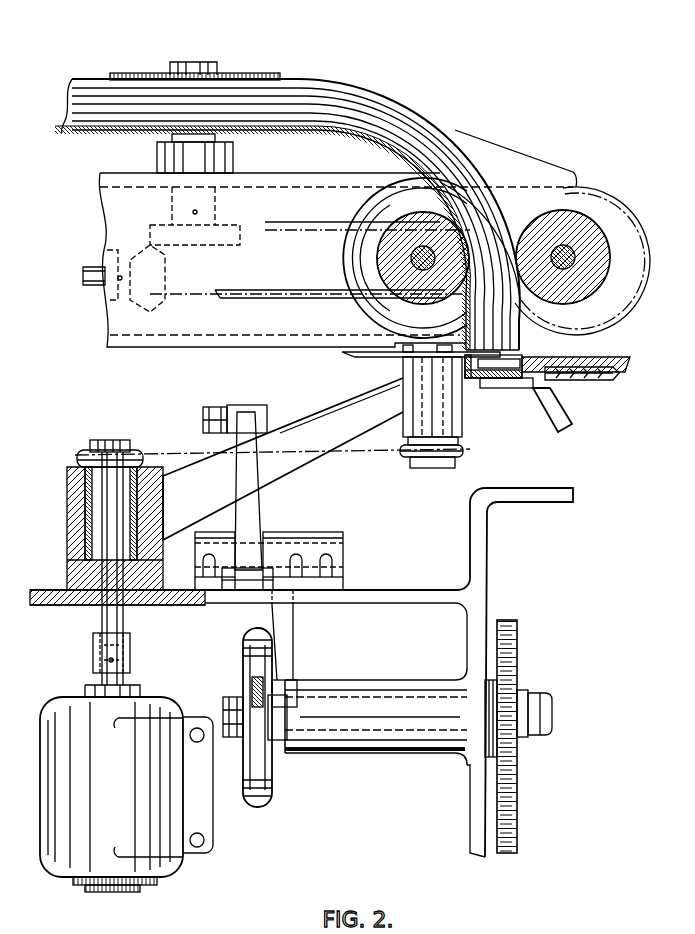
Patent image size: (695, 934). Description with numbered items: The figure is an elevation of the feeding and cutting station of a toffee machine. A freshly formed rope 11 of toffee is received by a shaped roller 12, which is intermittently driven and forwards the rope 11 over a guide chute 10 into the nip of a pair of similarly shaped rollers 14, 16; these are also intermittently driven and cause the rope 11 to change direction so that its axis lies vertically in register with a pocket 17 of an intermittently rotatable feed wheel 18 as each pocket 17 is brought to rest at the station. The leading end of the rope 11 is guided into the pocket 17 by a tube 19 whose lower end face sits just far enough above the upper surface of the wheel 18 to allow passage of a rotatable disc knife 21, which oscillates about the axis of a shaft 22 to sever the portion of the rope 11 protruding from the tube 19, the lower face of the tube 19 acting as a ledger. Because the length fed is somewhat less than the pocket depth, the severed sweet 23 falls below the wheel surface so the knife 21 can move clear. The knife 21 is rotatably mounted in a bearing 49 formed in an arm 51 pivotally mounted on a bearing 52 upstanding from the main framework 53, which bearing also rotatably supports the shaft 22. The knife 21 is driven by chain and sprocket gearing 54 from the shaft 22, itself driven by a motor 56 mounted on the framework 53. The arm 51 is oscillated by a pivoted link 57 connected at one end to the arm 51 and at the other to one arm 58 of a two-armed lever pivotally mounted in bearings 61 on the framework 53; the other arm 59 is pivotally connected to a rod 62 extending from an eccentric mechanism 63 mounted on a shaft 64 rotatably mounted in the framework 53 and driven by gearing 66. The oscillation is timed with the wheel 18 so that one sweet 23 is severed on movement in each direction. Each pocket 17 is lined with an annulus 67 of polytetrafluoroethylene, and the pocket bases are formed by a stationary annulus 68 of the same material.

The guide chute 10 is at (487, 150).
The rope 11 is at (352, 100).
The shaped roller 12 is at (230, 76).
The shaped roller 14 is at (590, 207).
The shaped roller 16 is at (368, 312).
The pocket 17 is at (476, 374).
The feed wheel 18 is at (585, 372).
The tube 19 is at (517, 305).
The disc knife 21 is at (368, 357).
The shaft 22 is at (105, 622).
The sweet 23 is at (492, 390).
The bearing 49 is at (452, 412).
The arm 51 is at (323, 422).
The bearing 52 is at (77, 466).
The main framework 53 is at (425, 597).
The chain and sprocket gearing 54 is at (134, 448).
The motor 56 is at (160, 868).
The pivoted link 57 is at (214, 406).
The lever arm 58 is at (252, 511).
The lever arm 59 is at (285, 628).
The bearings 61 is at (203, 557).
The rod 62 is at (243, 690).
The eccentric mechanism 63 is at (262, 760).
The shaft 64 is at (423, 730).
The gearing 66 is at (515, 828).
The annulus 67 is at (600, 358).
The stationary annulus 68 is at (508, 390).